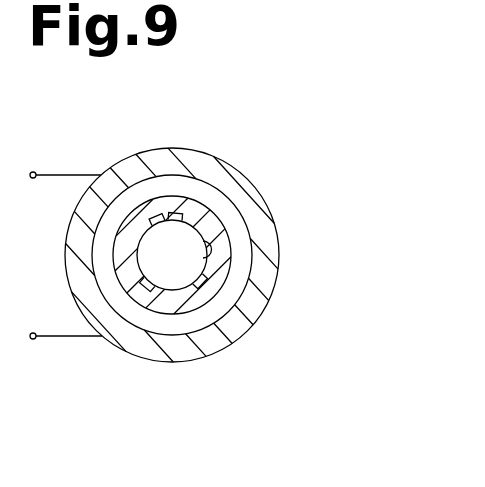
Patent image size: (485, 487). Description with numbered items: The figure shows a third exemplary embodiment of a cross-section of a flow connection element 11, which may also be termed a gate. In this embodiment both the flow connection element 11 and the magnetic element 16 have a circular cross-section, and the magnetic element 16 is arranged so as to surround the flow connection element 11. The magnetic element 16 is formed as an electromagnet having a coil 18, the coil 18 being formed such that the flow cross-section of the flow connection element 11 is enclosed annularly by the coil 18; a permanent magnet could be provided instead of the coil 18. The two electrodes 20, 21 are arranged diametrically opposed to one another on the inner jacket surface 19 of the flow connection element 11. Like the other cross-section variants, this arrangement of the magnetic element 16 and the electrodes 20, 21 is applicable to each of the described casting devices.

The magnetic element 16 is at (233, 269).
The coil 18 is at (267, 253).
The flow connection element 11 is at (231, 269).
The inner jacket surface 19 is at (207, 239).
The electrode 20 is at (158, 218).
The electrode 21 is at (152, 288).